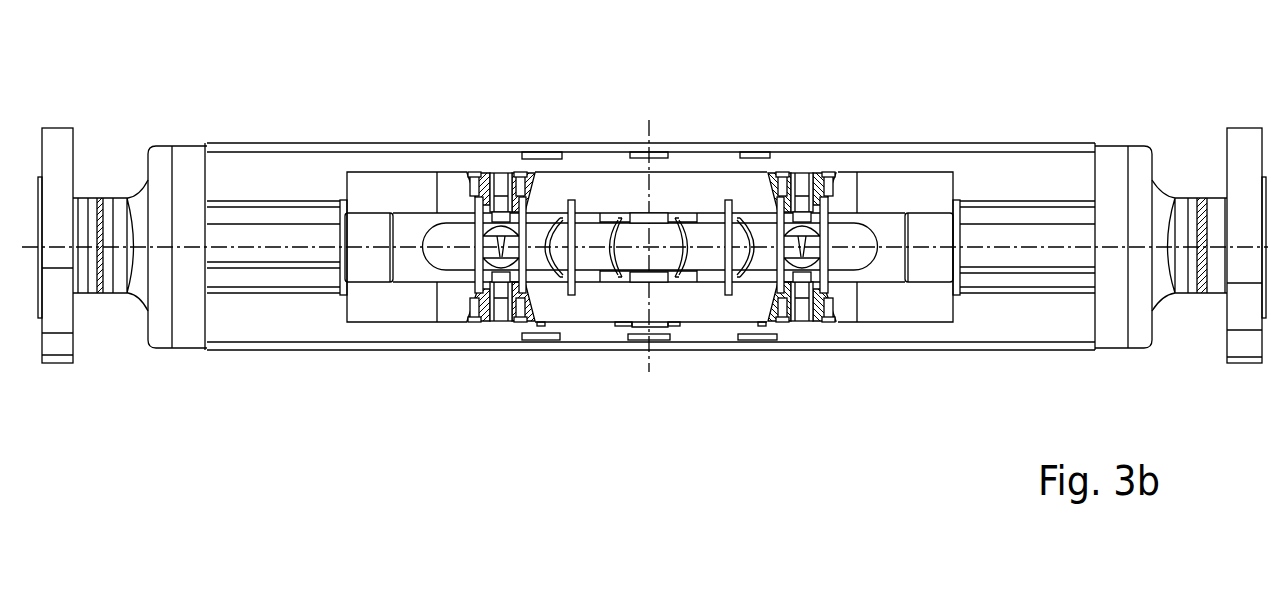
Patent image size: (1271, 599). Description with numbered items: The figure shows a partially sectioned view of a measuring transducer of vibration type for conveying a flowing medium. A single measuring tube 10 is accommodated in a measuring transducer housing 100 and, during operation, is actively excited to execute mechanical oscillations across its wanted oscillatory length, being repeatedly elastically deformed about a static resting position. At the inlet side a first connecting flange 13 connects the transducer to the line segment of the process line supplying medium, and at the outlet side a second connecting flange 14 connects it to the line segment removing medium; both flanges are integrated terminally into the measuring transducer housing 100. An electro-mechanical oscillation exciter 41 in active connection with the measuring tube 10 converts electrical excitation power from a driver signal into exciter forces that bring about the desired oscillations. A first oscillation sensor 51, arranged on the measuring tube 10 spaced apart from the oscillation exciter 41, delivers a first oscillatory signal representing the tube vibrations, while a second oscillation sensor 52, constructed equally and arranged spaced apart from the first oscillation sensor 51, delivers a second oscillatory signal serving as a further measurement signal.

The first connecting flange 13 is at (58, 148).
The second connecting flange 14 is at (1243, 145).
The measuring transducer housing 100 is at (240, 173).
The measuring tube 10 is at (455, 238).
The first oscillation sensor 51 is at (502, 326).
The second oscillation sensor 52 is at (800, 326).
The oscillation exciter 41 is at (645, 330).